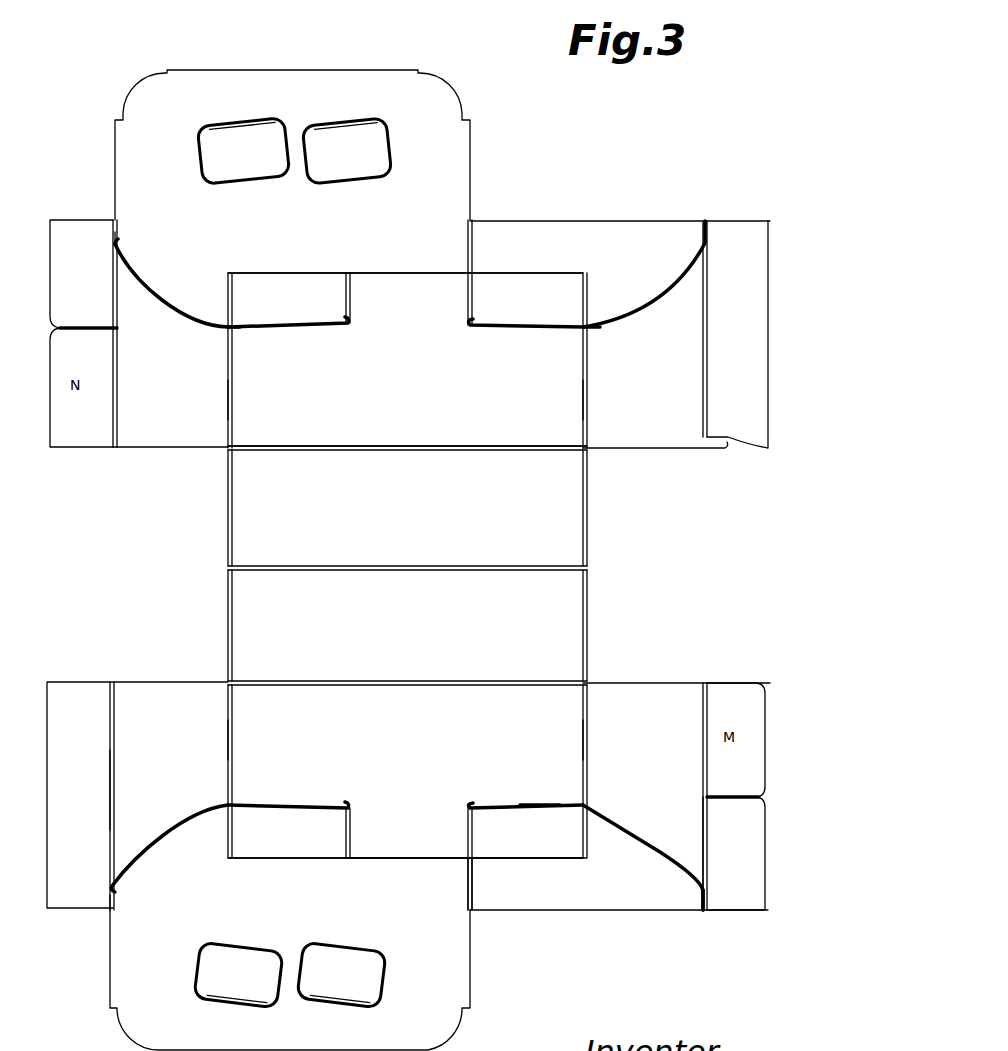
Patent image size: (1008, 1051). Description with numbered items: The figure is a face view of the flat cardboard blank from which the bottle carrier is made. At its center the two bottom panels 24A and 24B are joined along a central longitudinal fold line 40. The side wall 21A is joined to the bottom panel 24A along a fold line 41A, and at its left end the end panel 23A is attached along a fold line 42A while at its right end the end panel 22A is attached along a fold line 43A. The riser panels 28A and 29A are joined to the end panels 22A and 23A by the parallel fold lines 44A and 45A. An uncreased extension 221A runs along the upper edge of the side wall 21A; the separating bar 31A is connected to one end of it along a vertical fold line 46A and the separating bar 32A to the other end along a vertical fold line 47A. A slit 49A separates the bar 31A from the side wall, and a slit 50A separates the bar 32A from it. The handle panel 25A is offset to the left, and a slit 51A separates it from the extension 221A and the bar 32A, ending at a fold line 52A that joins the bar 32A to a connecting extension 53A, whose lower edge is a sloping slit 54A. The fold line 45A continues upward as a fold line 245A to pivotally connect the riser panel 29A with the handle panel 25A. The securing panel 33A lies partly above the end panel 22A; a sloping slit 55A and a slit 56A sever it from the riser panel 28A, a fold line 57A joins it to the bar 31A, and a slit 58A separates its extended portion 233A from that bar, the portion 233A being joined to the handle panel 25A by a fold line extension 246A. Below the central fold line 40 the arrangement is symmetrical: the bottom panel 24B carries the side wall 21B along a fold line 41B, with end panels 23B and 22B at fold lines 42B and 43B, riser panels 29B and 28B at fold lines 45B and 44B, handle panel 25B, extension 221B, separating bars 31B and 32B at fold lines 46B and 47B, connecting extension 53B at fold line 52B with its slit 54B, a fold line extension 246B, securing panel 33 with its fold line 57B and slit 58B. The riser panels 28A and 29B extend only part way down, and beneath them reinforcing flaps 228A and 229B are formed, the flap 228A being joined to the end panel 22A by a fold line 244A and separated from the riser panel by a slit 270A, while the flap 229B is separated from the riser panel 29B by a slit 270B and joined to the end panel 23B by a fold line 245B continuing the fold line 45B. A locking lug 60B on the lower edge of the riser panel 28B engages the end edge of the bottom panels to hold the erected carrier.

The handle panel 25B is at (457, 153).
The handle panel 25A is at (445, 967).
The riser panel 29B is at (72, 232).
The slit 270B is at (88, 325).
The reinforcing flap 229B is at (60, 442).
The end panel 23B is at (157, 442).
The fold line 45B is at (120, 312).
The fold line 245B is at (118, 227).
The slit 54B is at (152, 280).
The connecting extension 53B is at (203, 322).
The side wall 21B is at (425, 405).
The fold line 52B is at (232, 306).
The separating bar 32B is at (306, 320).
The slit 50A is at (263, 333).
The fold line 47B is at (350, 320).
The extension 221B is at (418, 305).
The fold line extension 246B is at (471, 252).
The fold line 46B is at (473, 306).
The separating bar 31B is at (514, 325).
The fold line 42B is at (232, 400).
The fold line 43B is at (583, 393).
The fold line 41B is at (380, 452).
The end panel 22B is at (640, 450).
The slit 58B is at (548, 263).
The fold line 57B is at (590, 295).
The securing panel 33 is at (618, 318).
The fold line 44B is at (703, 394).
The riser panel 28B is at (752, 345).
The locking lug 60B is at (738, 452).
The bottom panel 24B is at (587, 535).
The central longitudinal fold line 40 is at (380, 572).
The bottom panel 24A is at (585, 615).
The fold line 41A is at (380, 680).
The riser panel 29A is at (78, 710).
The end panel 23A is at (183, 690).
The fold line 45A is at (115, 762).
The slit 54A is at (152, 855).
The connecting extension 53A is at (190, 838).
The fold line extension 245A is at (118, 903).
The side wall 21A is at (423, 750).
The fold line 42A is at (232, 742).
The fold line 43A is at (583, 735).
The separating bar 32A is at (266, 815).
The fold line 52A is at (232, 832).
The fold line 47A is at (350, 820).
The extension 221A is at (411, 845).
The slit 51A is at (375, 860).
The separating bar 31A is at (510, 820).
The slit 49A is at (525, 808).
The fold line 46A is at (470, 838).
The fold line 57A is at (583, 827).
The slit 58A is at (528, 858).
The fold line extension 246A is at (476, 906).
The extended portion 233A is at (560, 910).
The end panel 22A is at (628, 700).
The fold line 244A is at (703, 722).
The reinforcing flap 228A is at (750, 720).
The slit 270A is at (720, 797).
The riser panel 28A is at (748, 865).
The fold line 44A is at (706, 848).
The slit 55A is at (640, 835).
The securing panel 33A is at (612, 840).
The slit 56A is at (703, 897).